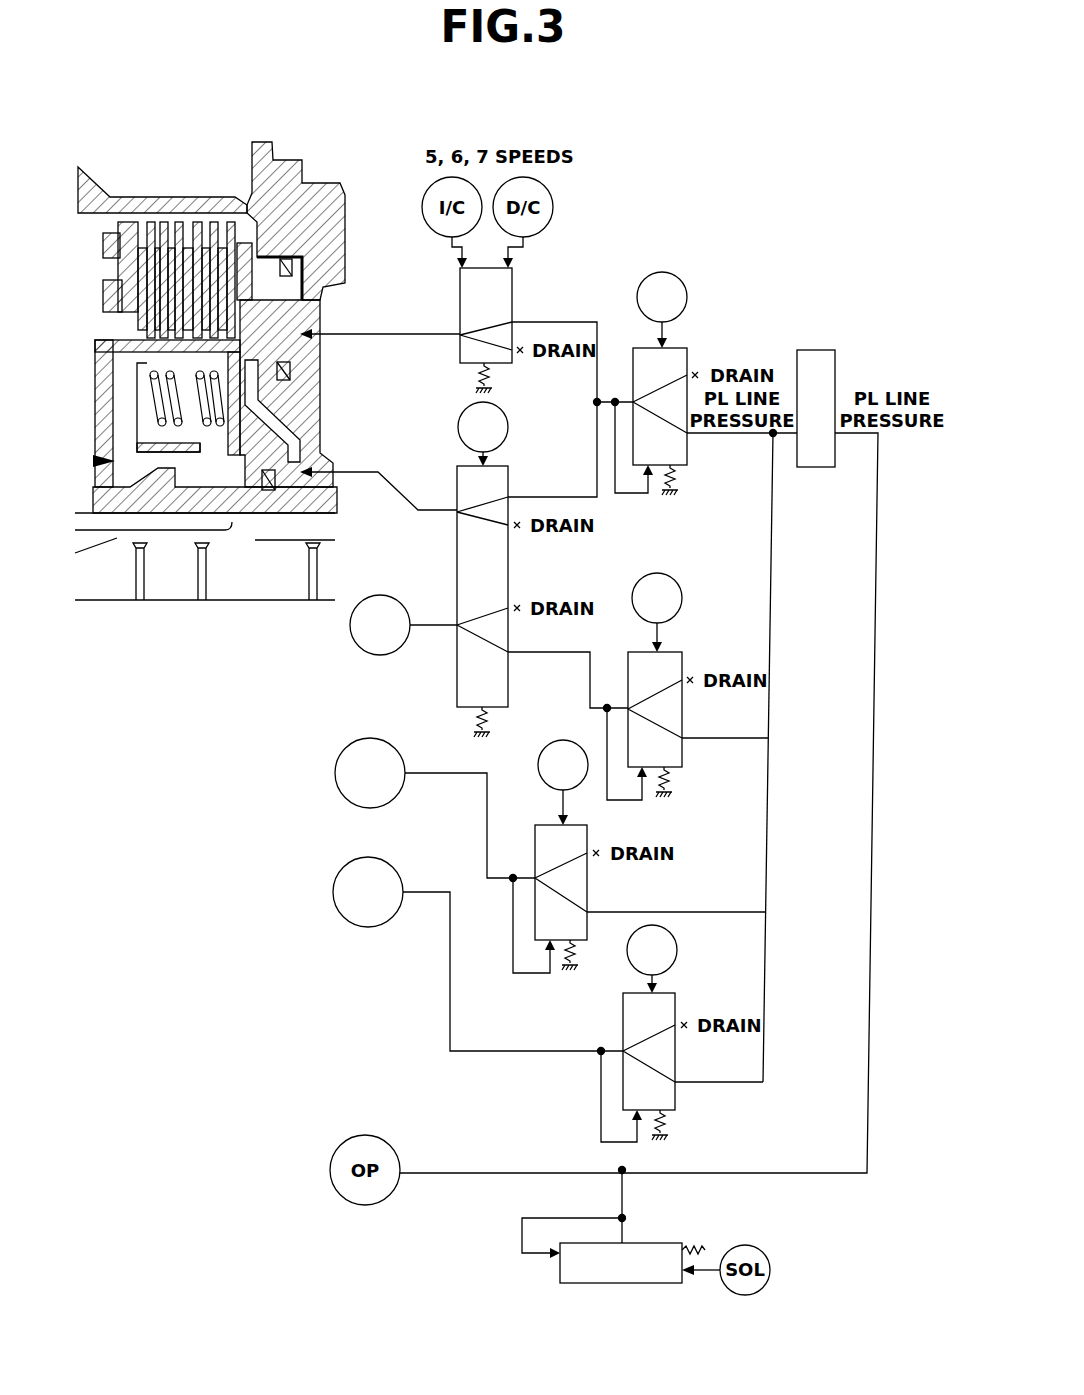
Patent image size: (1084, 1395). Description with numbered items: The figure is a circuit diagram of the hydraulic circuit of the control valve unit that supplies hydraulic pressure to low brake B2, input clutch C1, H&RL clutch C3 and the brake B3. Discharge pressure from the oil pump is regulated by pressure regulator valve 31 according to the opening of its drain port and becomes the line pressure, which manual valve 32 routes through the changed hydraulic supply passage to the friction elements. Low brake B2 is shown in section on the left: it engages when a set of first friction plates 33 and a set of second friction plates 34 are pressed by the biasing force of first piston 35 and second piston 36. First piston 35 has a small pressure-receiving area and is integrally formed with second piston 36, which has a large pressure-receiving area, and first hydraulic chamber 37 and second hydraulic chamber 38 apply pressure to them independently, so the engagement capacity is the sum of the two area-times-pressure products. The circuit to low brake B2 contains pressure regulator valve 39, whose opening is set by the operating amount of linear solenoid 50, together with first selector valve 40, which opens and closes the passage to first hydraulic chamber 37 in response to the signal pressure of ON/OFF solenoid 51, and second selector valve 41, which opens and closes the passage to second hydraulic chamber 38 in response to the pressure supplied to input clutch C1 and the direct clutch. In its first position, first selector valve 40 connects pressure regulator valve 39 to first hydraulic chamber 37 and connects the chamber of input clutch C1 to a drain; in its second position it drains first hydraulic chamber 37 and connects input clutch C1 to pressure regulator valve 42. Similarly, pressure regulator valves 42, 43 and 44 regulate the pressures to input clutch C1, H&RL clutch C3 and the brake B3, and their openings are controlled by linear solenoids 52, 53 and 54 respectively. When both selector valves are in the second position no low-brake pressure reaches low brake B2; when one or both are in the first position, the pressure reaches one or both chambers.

The pressure regulator valve 31 is at (662, 1243).
The manual valve 32 is at (815, 350).
The first friction plates 33 is at (180, 228).
The second friction plates 34 is at (175, 357).
The first piston 35 is at (292, 482).
The second piston 36 is at (268, 260).
The first hydraulic chamber 37 is at (300, 490).
The second hydraulic chamber 38 is at (305, 278).
The pressure regulator valve 39 is at (690, 350).
The first selector valve 40 is at (510, 480).
The second selector valve 41 is at (512, 292).
The pressure regulator valve 42 is at (675, 652).
The pressure regulator valve 43 is at (545, 825).
The pressure regulator valve 44 is at (670, 993).
The linear solenoid 50 is at (658, 272).
The ON/OFF solenoid 51 is at (508, 427).
The linear solenoid 52 is at (655, 573).
The linear solenoid 53 is at (558, 742).
The linear solenoid 54 is at (630, 968).
The low brake B2 is at (206, 178).
The input clutch C1 is at (352, 633).
The H&RL clutch C3 is at (337, 776).
The 2346-brake B3 is at (335, 888).